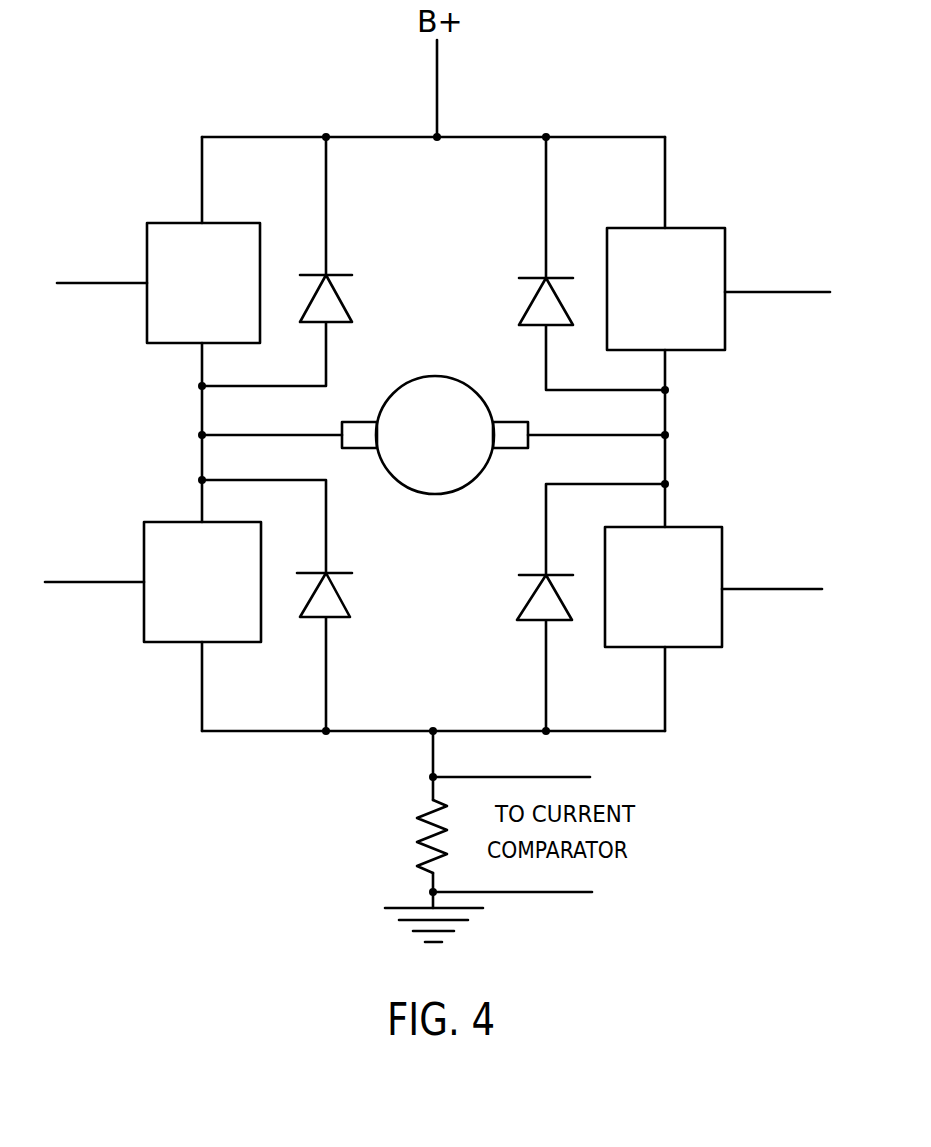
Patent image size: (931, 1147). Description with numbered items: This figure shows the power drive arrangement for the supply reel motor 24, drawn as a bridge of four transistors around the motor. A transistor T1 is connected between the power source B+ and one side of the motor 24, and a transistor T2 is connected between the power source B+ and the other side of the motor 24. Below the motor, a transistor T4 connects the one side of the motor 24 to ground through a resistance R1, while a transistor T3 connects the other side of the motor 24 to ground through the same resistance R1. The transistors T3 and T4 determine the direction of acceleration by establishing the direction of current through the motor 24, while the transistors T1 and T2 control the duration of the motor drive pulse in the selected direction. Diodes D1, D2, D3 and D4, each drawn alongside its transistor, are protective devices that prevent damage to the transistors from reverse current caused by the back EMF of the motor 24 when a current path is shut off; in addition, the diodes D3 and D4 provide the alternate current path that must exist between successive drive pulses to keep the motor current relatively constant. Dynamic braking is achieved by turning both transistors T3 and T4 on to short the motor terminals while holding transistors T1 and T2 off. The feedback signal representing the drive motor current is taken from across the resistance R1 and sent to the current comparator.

The supply reel motor 24 is at (462, 463).
The transistor T1 is at (158, 283).
The transistor T2 is at (718, 289).
The transistor T3 is at (713, 587).
The transistor T4 is at (153, 582).
The diode D1 is at (300, 261).
The diode D2 is at (568, 263).
The diode D3 is at (571, 607).
The diode D4 is at (296, 605).
The resistance R1 is at (408, 836).